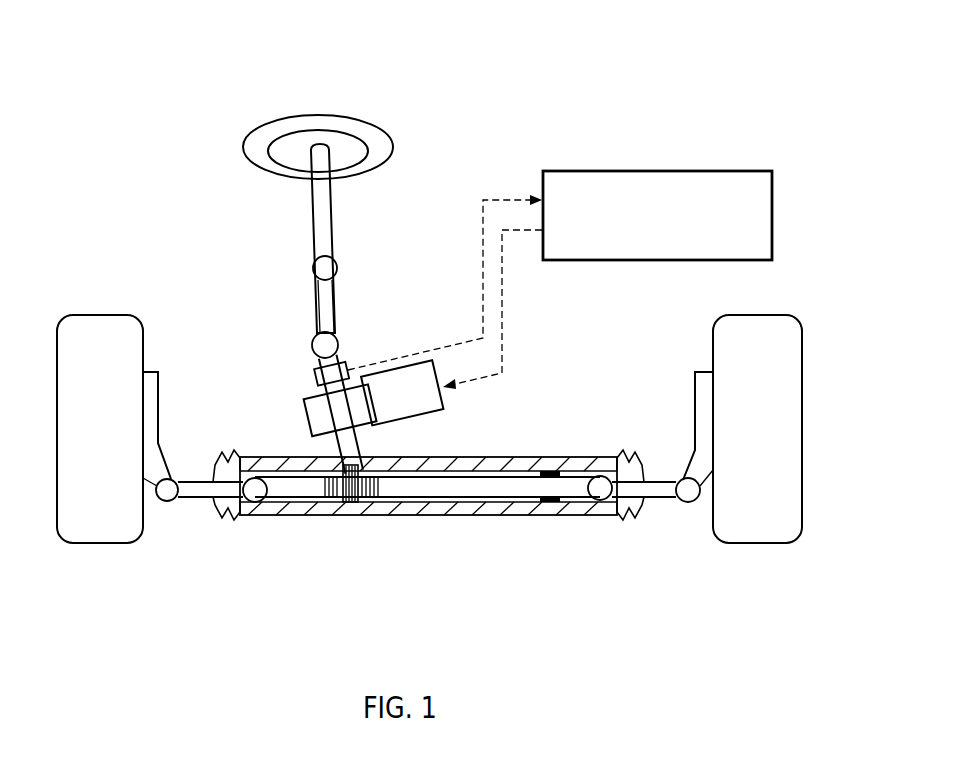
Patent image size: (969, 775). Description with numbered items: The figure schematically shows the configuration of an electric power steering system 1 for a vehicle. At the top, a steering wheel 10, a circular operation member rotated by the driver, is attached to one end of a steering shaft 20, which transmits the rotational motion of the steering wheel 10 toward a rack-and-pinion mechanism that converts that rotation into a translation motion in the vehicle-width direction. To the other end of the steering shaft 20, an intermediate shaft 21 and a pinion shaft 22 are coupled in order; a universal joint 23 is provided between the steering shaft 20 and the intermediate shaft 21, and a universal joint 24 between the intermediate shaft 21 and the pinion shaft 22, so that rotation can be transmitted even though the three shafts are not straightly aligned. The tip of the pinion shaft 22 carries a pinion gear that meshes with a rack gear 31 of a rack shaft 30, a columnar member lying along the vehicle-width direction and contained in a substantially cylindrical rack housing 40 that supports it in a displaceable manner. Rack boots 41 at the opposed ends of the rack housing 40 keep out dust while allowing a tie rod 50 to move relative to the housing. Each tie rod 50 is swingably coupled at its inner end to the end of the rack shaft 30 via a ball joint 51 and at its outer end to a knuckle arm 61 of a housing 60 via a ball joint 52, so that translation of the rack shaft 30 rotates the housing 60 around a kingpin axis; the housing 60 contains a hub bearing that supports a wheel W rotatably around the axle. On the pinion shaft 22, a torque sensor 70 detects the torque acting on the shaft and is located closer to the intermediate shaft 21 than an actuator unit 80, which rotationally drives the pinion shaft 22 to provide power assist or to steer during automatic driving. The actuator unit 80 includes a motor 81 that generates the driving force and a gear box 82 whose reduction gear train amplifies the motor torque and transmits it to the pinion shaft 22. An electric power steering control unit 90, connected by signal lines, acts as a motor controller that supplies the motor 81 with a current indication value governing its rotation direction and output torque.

The electric power steering system 1 is at (178, 148).
The steering wheel 10 is at (282, 122).
The steering shaft 20 is at (332, 220).
The intermediate shaft 21 is at (333, 298).
The pinion shaft 22 is at (340, 443).
The universal joint 23 is at (315, 267).
The universal joint 24 is at (325, 345).
The rack shaft 30 is at (438, 495).
The rack gear 31 is at (375, 490).
The rack housing 40 is at (477, 513).
The rack boot 41 is at (228, 517).
The tie rod 50 is at (215, 492).
The ball joint 51 is at (253, 493).
The ball joint 52 is at (172, 495).
The housing 60 is at (148, 418).
The knuckle arm 61 is at (152, 480).
The torque sensor 70 is at (312, 417).
The actuator unit 80 is at (320, 375).
The motor 81 is at (430, 375).
The gear box 82 is at (272, 368).
The electric power steering control unit 90 is at (772, 183).
The wheel W is at (88, 543).